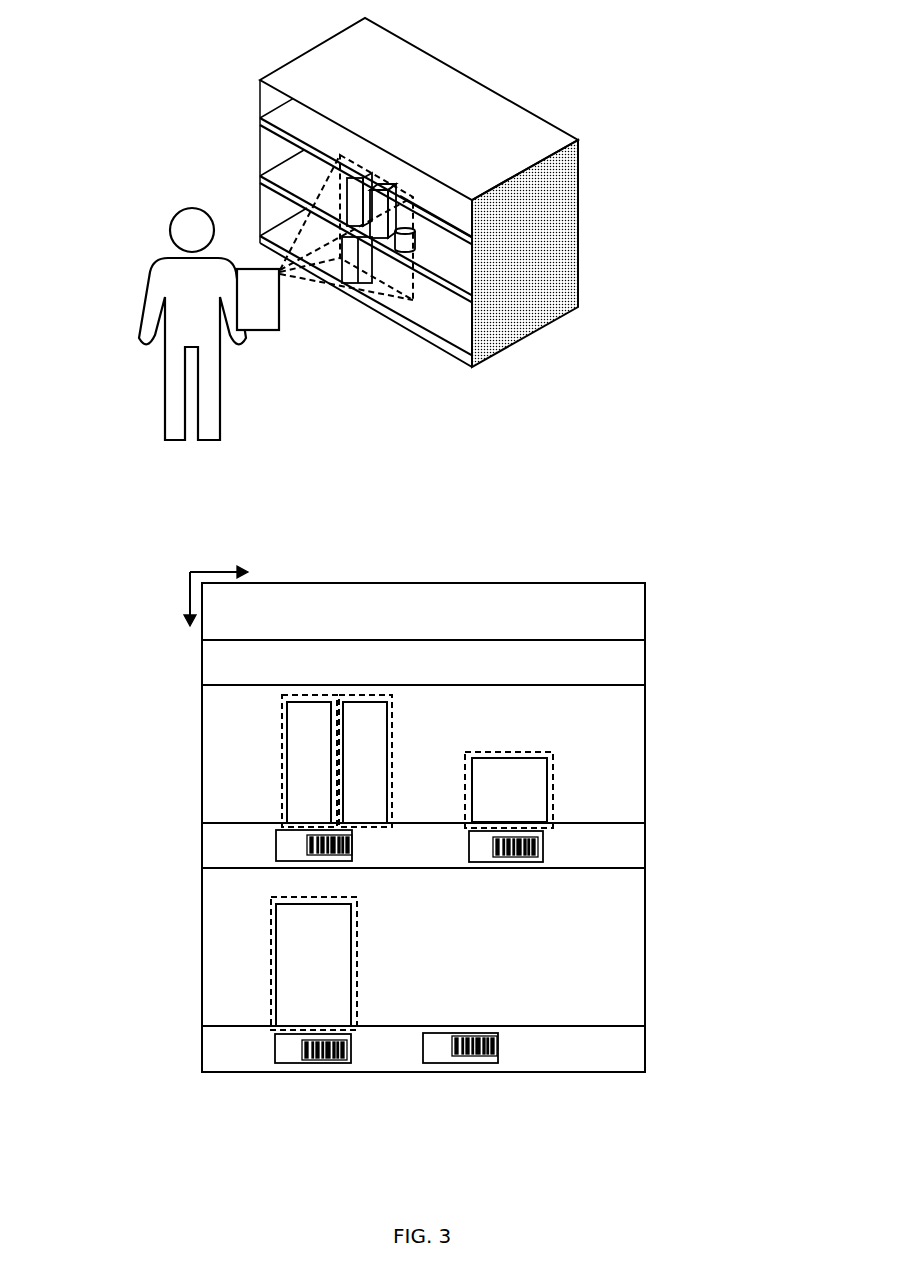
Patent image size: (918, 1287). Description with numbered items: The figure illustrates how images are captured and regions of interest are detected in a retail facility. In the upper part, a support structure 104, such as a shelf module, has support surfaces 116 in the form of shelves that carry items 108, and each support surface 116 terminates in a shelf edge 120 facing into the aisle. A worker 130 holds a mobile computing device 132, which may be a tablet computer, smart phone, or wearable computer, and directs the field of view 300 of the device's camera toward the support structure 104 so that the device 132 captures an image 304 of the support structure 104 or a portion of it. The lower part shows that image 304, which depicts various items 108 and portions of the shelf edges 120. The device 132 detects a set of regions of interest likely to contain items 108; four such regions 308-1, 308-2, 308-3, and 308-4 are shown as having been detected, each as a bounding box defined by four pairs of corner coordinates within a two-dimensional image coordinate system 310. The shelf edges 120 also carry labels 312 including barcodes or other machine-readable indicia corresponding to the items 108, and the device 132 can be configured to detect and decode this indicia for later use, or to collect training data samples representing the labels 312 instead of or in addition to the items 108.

The support structure 104 is at (550, 324).
The support surface 116 is at (282, 118).
The shelf edge 120 is at (433, 220).
The item 108 is at (363, 283).
The field of view 300 is at (317, 293).
The worker 130 is at (163, 418).
The mobile computing device 132 is at (272, 332).
The image 304 is at (652, 612).
The two-dimensional image coordinate system 310 is at (190, 572).
The region of interest 308-1 is at (282, 760).
The region of interest 308-2 is at (393, 727).
The region of interest 308-3 is at (553, 790).
The region of interest 308-4 is at (272, 963).
The label 312 is at (545, 846).